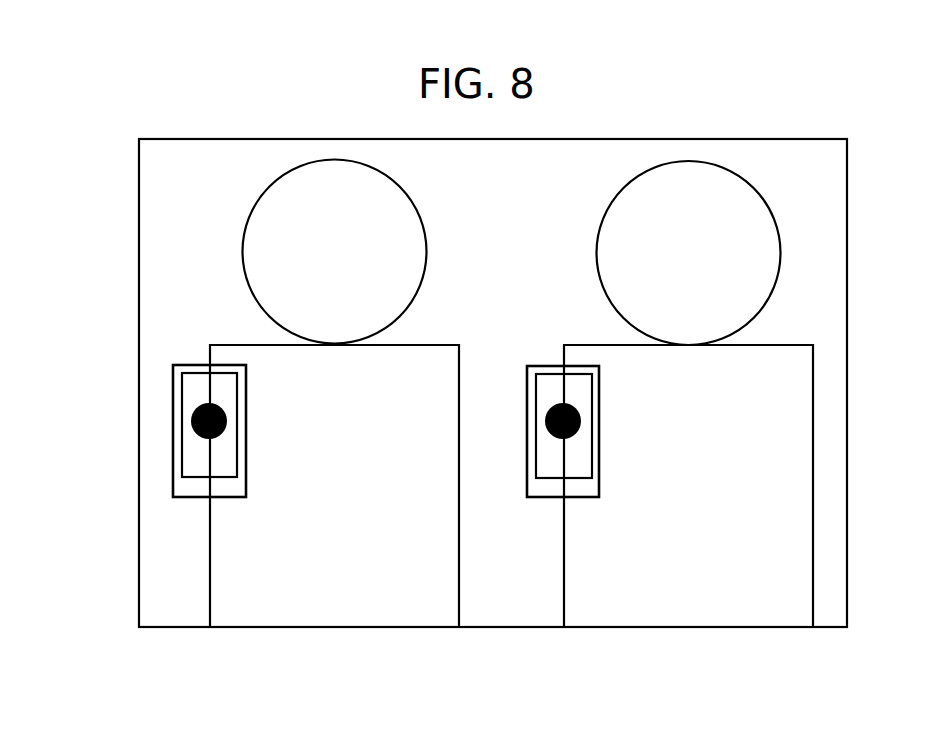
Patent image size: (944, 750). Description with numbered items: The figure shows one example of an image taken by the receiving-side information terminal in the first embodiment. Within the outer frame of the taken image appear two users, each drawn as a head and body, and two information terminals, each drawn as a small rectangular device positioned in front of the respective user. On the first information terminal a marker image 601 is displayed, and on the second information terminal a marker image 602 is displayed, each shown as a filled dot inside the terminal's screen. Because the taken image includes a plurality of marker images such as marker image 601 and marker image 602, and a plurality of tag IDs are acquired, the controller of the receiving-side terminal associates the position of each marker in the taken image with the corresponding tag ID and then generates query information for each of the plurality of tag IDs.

The marker image 601 is at (205, 438).
The marker image 602 is at (560, 438).